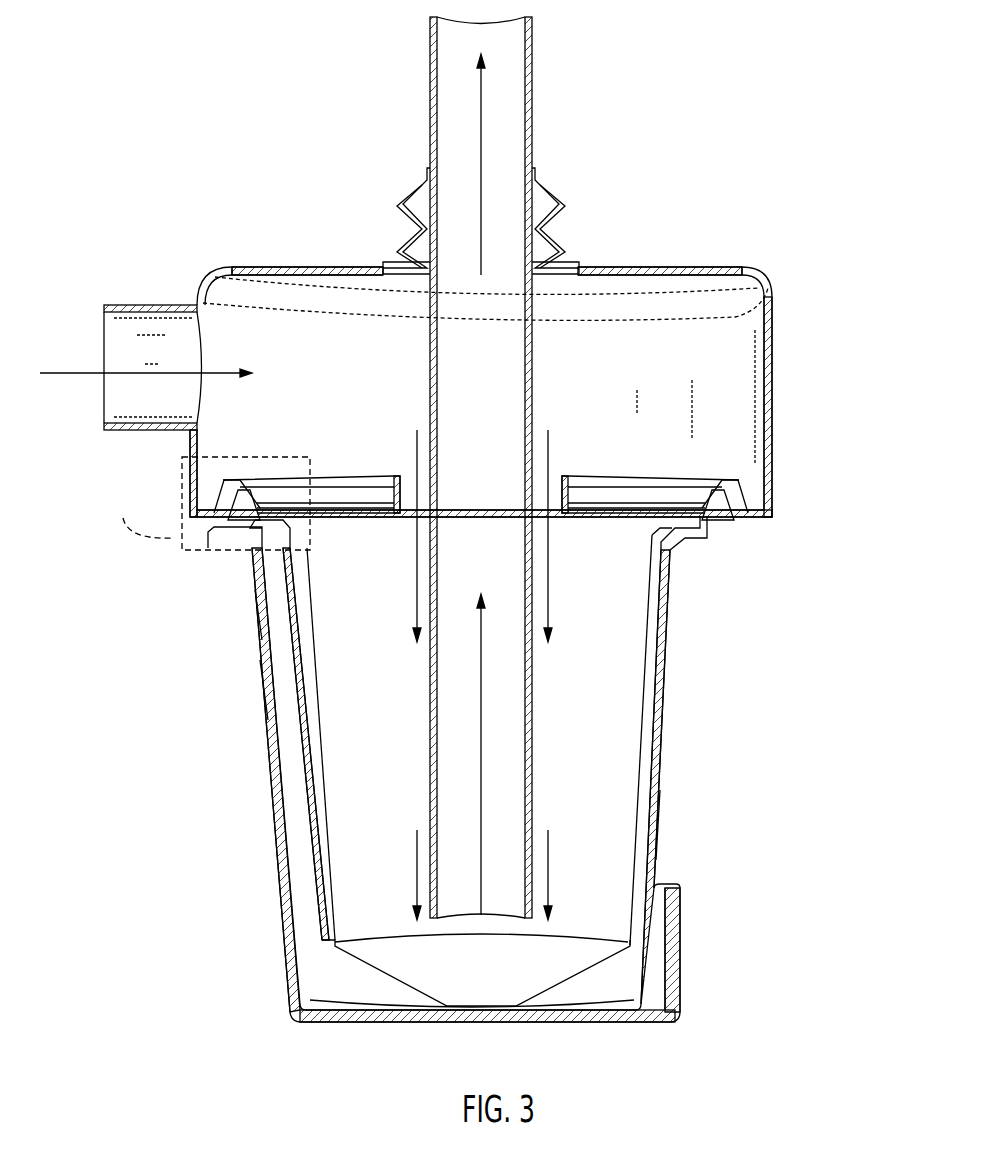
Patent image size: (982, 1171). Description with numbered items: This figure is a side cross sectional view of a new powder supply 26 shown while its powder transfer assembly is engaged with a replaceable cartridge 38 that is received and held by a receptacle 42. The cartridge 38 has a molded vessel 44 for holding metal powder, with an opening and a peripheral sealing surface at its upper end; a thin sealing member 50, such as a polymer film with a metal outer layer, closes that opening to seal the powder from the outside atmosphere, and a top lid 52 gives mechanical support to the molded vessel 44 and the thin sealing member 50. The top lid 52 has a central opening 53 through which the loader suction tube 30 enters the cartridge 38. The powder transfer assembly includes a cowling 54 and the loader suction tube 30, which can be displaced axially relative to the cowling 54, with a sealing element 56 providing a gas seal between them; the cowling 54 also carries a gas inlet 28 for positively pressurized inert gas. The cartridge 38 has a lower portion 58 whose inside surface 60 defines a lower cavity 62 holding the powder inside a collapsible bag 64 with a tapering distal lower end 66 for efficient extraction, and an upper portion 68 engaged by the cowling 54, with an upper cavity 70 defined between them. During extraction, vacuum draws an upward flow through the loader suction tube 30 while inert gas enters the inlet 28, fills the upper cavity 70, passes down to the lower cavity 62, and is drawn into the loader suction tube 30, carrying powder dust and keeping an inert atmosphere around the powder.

The new powder supply 26 is at (178, 126).
The gas inlet 28 is at (122, 305).
The loader suction tube 30 is at (430, 722).
The replaceable cartridge 38 is at (660, 767).
The receptacle 42 is at (678, 938).
The molded vessel 44 is at (658, 838).
The thin sealing member 50 is at (593, 527).
The top lid 52 is at (670, 508).
The central opening 53 is at (537, 512).
The cowling 54 is at (773, 356).
The sealing element 56 is at (546, 213).
The lower portion 58 is at (266, 697).
The inside surface 60 is at (258, 640).
The lower cavity 62 is at (352, 850).
The collapsible bag 64 is at (643, 723).
The tapering distal lower end 66 is at (352, 960).
The upper portion 68 is at (745, 503).
The upper cavity 70 is at (718, 333).